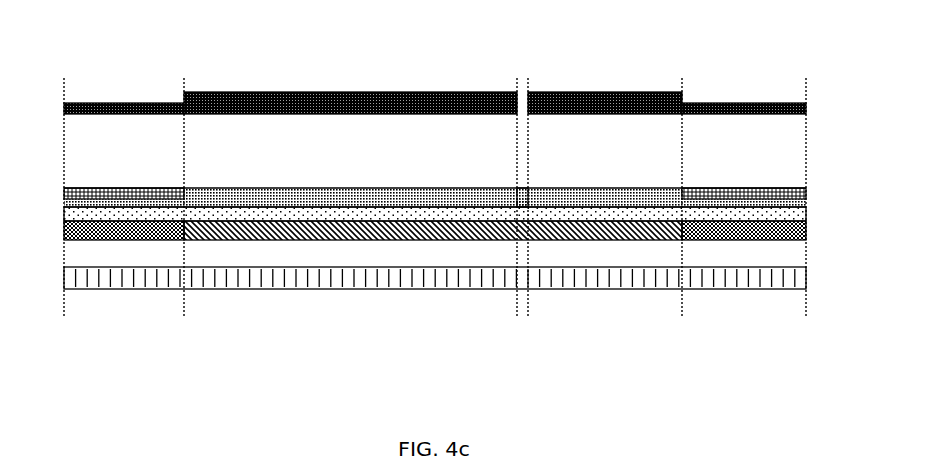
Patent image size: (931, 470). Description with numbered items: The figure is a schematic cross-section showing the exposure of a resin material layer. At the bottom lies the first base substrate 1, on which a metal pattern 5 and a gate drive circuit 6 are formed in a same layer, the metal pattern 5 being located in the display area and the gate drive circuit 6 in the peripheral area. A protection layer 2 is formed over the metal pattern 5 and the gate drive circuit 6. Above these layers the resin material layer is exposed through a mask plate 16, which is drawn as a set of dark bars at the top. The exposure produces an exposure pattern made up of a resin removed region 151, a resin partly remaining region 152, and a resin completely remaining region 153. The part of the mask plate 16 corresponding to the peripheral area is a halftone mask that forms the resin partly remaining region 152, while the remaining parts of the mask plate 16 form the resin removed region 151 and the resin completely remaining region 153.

The mask plate 16 is at (322, 93).
The resin completely remaining region 153 is at (322, 189).
The resin partly remaining region 152 is at (104, 189).
The resin removed region 151 is at (522, 189).
The gate drive circuit 6 is at (125, 230).
The protection layer 2 is at (267, 215).
The metal pattern 5 is at (642, 230).
The first base substrate 1 is at (460, 257).